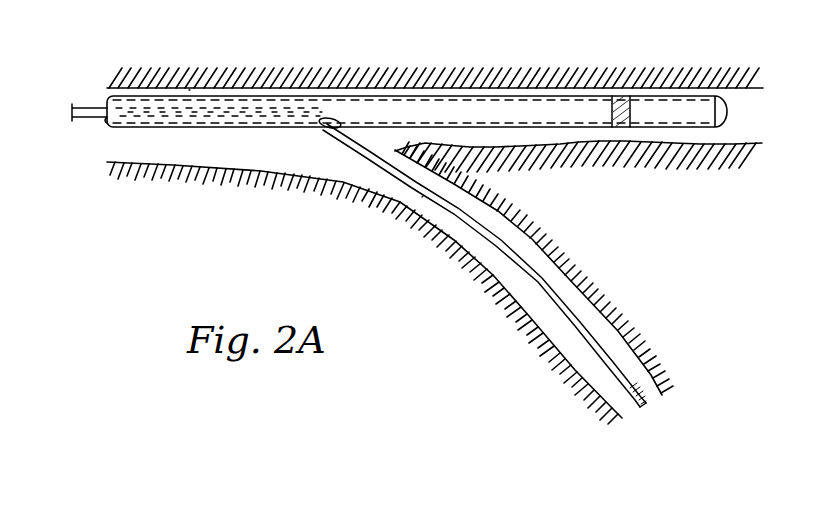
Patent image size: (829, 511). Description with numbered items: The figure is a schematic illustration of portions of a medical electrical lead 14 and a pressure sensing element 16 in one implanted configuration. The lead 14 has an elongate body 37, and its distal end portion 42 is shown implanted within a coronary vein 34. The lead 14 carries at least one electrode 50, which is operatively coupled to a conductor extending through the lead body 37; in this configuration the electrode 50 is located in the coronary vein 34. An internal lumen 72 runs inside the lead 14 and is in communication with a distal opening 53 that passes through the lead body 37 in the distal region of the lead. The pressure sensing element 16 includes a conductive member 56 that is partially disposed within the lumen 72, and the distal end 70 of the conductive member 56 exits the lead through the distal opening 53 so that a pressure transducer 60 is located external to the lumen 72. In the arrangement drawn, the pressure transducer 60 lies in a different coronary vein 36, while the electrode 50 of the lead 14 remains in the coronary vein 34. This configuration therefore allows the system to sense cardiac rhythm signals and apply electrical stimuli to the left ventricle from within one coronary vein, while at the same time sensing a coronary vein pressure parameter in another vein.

The lead 14 is at (130, 87).
The elongate body 37 is at (190, 89).
The internal lumen 72 is at (268, 108).
The distal opening 53 is at (334, 118).
The distal end portion 42 is at (440, 94).
The electrode 50 is at (620, 98).
The coronary vein 34 is at (740, 105).
The pressure sensing element 16 is at (88, 120).
The conductive member 56 is at (421, 197).
The coronary vein 36 is at (537, 300).
The distal end 70 is at (621, 337).
The pressure transducer 60 is at (634, 410).